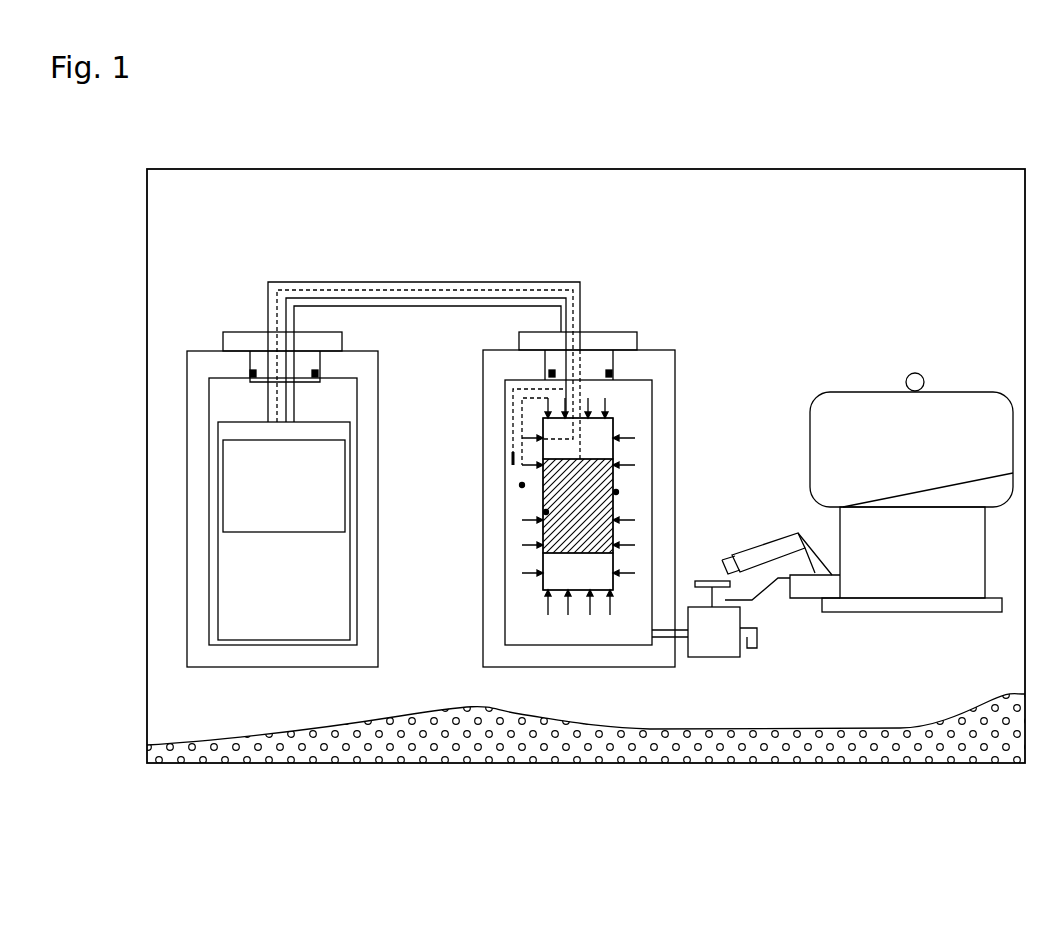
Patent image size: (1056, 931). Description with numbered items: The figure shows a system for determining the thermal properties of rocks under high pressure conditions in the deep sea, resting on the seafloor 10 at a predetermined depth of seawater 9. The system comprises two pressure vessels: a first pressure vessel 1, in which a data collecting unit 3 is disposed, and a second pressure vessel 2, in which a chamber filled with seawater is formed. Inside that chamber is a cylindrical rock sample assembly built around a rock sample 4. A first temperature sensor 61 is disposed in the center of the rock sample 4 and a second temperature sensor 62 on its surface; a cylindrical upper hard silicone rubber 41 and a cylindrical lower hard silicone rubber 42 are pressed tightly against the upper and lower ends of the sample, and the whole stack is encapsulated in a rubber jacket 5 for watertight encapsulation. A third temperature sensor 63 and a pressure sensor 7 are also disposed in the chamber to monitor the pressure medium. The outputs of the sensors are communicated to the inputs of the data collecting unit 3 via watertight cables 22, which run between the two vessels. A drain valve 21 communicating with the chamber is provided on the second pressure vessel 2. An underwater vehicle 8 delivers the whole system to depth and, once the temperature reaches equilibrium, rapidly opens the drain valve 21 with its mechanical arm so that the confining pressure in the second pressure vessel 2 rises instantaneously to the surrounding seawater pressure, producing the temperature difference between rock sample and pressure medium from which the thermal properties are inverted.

The first pressure vessel 1 is at (188, 507).
The second pressure vessel 2 is at (483, 512).
The data collecting unit 3 is at (255, 578).
The rock sample 4 is at (582, 515).
The upper hard silicone rubber 41 is at (600, 437).
The lower hard silicone rubber 42 is at (607, 583).
The rubber jacket 5 is at (543, 590).
The first temperature sensor 61 is at (616, 492).
The second temperature sensor 62 is at (546, 512).
The third temperature sensor 63 is at (522, 485).
The pressure sensor 7 is at (515, 470).
The underwater vehicle 8 is at (865, 452).
The seawater 9 is at (165, 688).
The seafloor 10 is at (470, 748).
The drain valve 21 is at (715, 640).
The watertight cables 22 is at (427, 282).